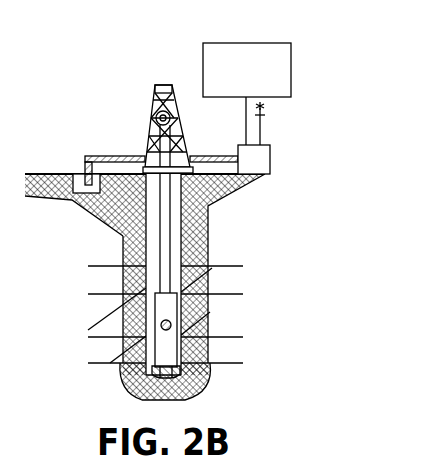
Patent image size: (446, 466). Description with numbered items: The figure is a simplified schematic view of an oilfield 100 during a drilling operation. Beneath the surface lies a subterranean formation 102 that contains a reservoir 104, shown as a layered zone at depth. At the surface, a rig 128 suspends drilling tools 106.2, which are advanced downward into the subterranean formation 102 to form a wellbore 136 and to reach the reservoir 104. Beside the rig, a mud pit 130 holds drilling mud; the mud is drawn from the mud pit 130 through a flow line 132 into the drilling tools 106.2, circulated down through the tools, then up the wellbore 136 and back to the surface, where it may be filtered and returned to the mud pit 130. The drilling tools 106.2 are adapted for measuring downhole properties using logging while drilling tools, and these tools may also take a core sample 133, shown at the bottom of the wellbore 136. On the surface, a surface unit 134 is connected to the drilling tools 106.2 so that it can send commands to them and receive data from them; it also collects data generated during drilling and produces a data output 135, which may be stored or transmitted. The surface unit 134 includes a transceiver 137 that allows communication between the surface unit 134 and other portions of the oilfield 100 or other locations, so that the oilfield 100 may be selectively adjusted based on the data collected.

The oilfield 100 is at (85, 84).
The subterranean formation 102 is at (256, 257).
The reservoir 104 is at (240, 328).
The drilling tools 106.2 is at (157, 322).
The rig 128 is at (145, 125).
The mud pit 130 is at (87, 196).
The flow line 132 is at (84, 157).
The core sample 133 is at (150, 372).
The surface unit 134 is at (272, 158).
The data output 135 is at (265, 43).
The wellbore 136 is at (183, 214).
The transceiver 137 is at (263, 122).